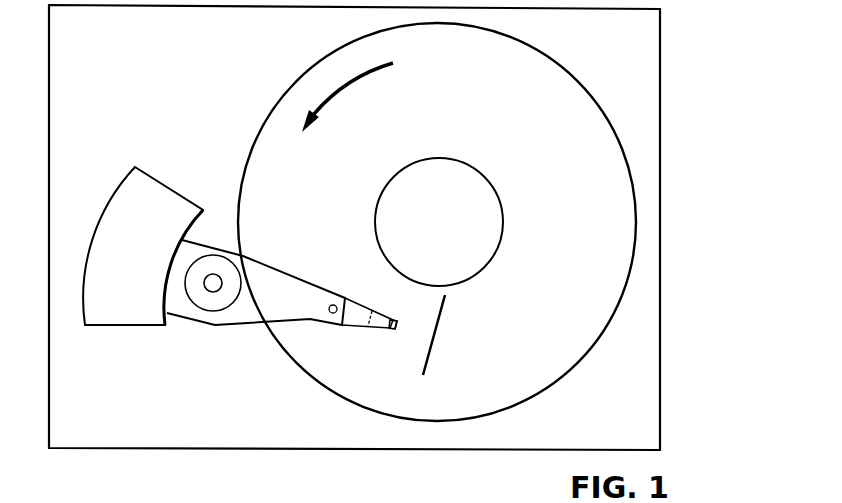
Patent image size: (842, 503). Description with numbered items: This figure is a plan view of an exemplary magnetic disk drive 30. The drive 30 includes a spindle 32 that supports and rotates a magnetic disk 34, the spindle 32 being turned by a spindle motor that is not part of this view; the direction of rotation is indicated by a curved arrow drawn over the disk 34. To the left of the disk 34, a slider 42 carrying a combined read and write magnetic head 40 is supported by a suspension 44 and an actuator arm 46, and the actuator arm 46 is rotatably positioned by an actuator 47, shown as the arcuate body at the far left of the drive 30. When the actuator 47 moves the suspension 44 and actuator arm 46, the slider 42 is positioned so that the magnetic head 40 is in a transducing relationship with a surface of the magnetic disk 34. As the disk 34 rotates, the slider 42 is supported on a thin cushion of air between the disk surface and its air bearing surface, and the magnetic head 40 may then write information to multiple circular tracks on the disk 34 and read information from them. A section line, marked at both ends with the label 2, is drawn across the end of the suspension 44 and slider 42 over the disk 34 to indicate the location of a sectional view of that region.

The magnetic disk drive 30 is at (676, 46).
The spindle 32 is at (477, 169).
The magnetic disk 34 is at (584, 243).
The magnetic head 40 is at (400, 328).
The slider 42 is at (398, 318).
The suspension 44 is at (355, 328).
The actuator arm 46 is at (298, 285).
The actuator 47 is at (175, 197).
The section line for FIG. 2 is at (452, 300).